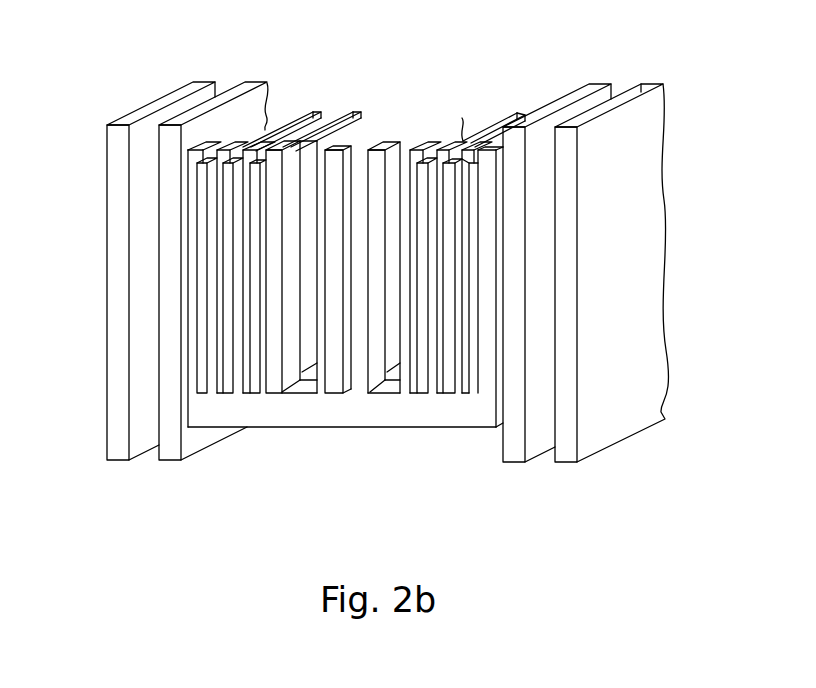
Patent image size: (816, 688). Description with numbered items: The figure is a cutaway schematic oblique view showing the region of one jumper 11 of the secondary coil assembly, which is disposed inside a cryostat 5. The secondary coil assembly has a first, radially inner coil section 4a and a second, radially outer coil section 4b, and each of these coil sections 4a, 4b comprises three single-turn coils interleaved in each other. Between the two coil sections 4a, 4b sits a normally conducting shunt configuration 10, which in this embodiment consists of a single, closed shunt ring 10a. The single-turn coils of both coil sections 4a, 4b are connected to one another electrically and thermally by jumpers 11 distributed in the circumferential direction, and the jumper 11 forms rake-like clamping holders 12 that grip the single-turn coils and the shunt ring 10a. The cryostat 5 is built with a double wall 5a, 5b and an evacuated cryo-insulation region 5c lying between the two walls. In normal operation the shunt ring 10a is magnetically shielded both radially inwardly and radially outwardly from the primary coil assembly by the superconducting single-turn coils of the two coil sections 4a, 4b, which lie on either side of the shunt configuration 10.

The first, radially inner coil section 4a is at (313, 96).
The second, radially outer coil section 4b is at (482, 114).
The cryostat 5 is at (146, 470).
The double wall 5a is at (513, 438).
The double wall 5b is at (563, 438).
The evacuated cryo-insulation region 5c is at (545, 430).
The normally conducting shunt configuration 10 is at (345, 262).
The shunt ring 10a is at (336, 183).
The jumper 11 is at (385, 407).
The rake-like clamping holders 12 is at (273, 163).